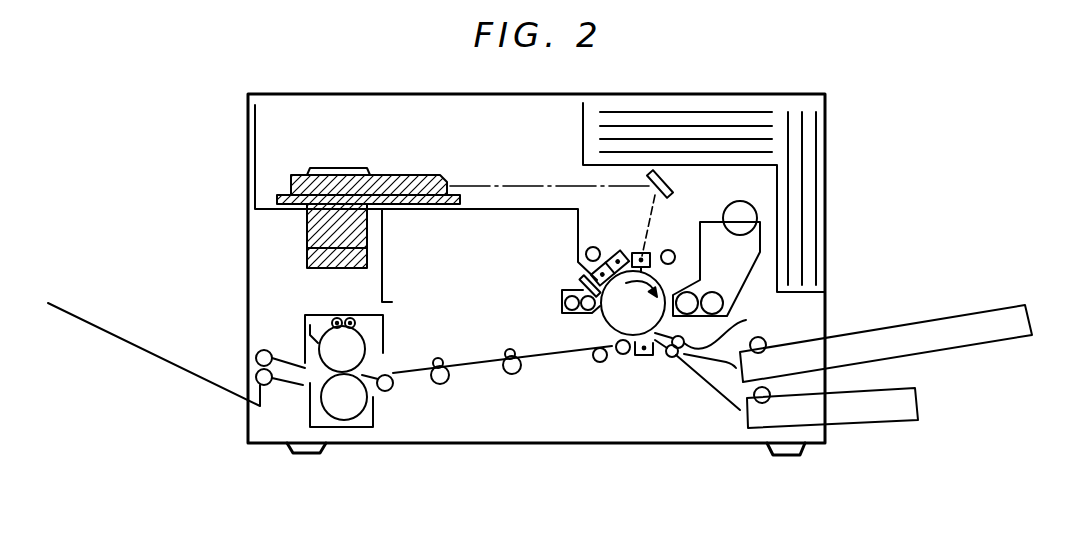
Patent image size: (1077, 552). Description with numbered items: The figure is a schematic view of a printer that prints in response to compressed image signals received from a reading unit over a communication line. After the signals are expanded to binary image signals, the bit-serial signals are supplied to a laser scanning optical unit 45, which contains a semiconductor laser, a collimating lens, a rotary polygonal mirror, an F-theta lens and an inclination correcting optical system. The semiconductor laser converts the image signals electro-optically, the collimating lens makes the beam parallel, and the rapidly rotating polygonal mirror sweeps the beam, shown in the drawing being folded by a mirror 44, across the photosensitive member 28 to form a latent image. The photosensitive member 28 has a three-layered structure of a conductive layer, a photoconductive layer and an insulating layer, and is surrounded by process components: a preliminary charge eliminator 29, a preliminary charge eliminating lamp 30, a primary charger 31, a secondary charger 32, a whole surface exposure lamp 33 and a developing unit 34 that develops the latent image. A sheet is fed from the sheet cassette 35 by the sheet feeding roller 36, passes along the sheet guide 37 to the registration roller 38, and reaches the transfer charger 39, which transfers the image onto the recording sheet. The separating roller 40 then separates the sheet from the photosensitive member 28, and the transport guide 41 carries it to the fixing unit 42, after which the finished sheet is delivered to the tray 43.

The photosensitive member 28 is at (605, 326).
The preliminary charge eliminator 29 is at (600, 262).
The preliminary charge eliminating lamp 30 is at (586, 252).
The primary charger 31 is at (621, 256).
The secondary charger 32 is at (650, 250).
The whole surface exposure lamp 33 is at (673, 251).
The developing unit 34 is at (732, 287).
The sheet cassette 35 is at (795, 342).
The sheet feeding roller 36 is at (766, 341).
The sheet guide 37 is at (712, 362).
The registration roller 38 is at (672, 358).
The transfer charger 39 is at (643, 357).
The separating roller 40 is at (614, 353).
The transport guide 41 is at (540, 357).
The fixing unit 42 is at (360, 348).
The tray 43 is at (150, 350).
The mirror 44 is at (674, 182).
The laser scanning optical unit 45 is at (428, 175).